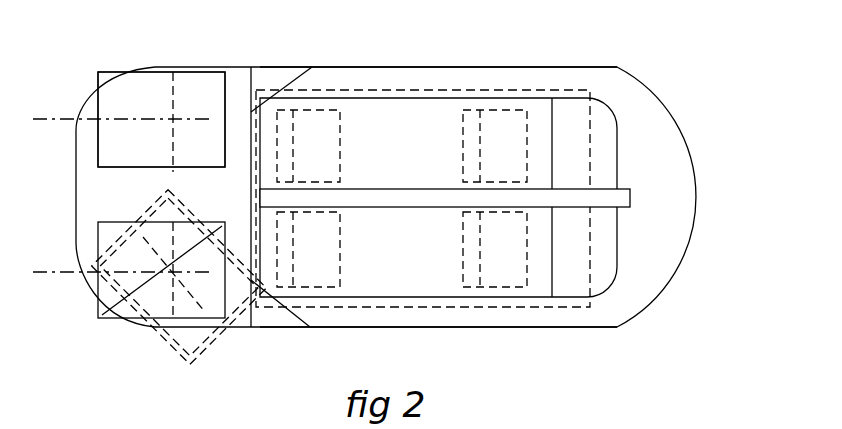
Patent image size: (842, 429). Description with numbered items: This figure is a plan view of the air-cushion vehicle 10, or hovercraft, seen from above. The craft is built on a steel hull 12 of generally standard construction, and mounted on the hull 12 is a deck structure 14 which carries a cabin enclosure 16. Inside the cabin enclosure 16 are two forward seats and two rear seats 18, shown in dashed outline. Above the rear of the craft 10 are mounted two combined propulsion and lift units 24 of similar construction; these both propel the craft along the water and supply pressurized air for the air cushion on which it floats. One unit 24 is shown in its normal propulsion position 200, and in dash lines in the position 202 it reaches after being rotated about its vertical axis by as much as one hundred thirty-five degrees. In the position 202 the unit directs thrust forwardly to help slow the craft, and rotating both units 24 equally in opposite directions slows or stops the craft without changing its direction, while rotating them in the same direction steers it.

The air-cushion vehicle 10 is at (680, 127).
The steel hull 12 is at (420, 65).
The deck structure 14 is at (512, 322).
The cabin enclosure 16 is at (507, 88).
The seats 18 is at (343, 147).
The combined propulsion and lift units 24 is at (200, 70).
The normal propulsion position 200 is at (117, 68).
The rotated position 202 is at (193, 353).